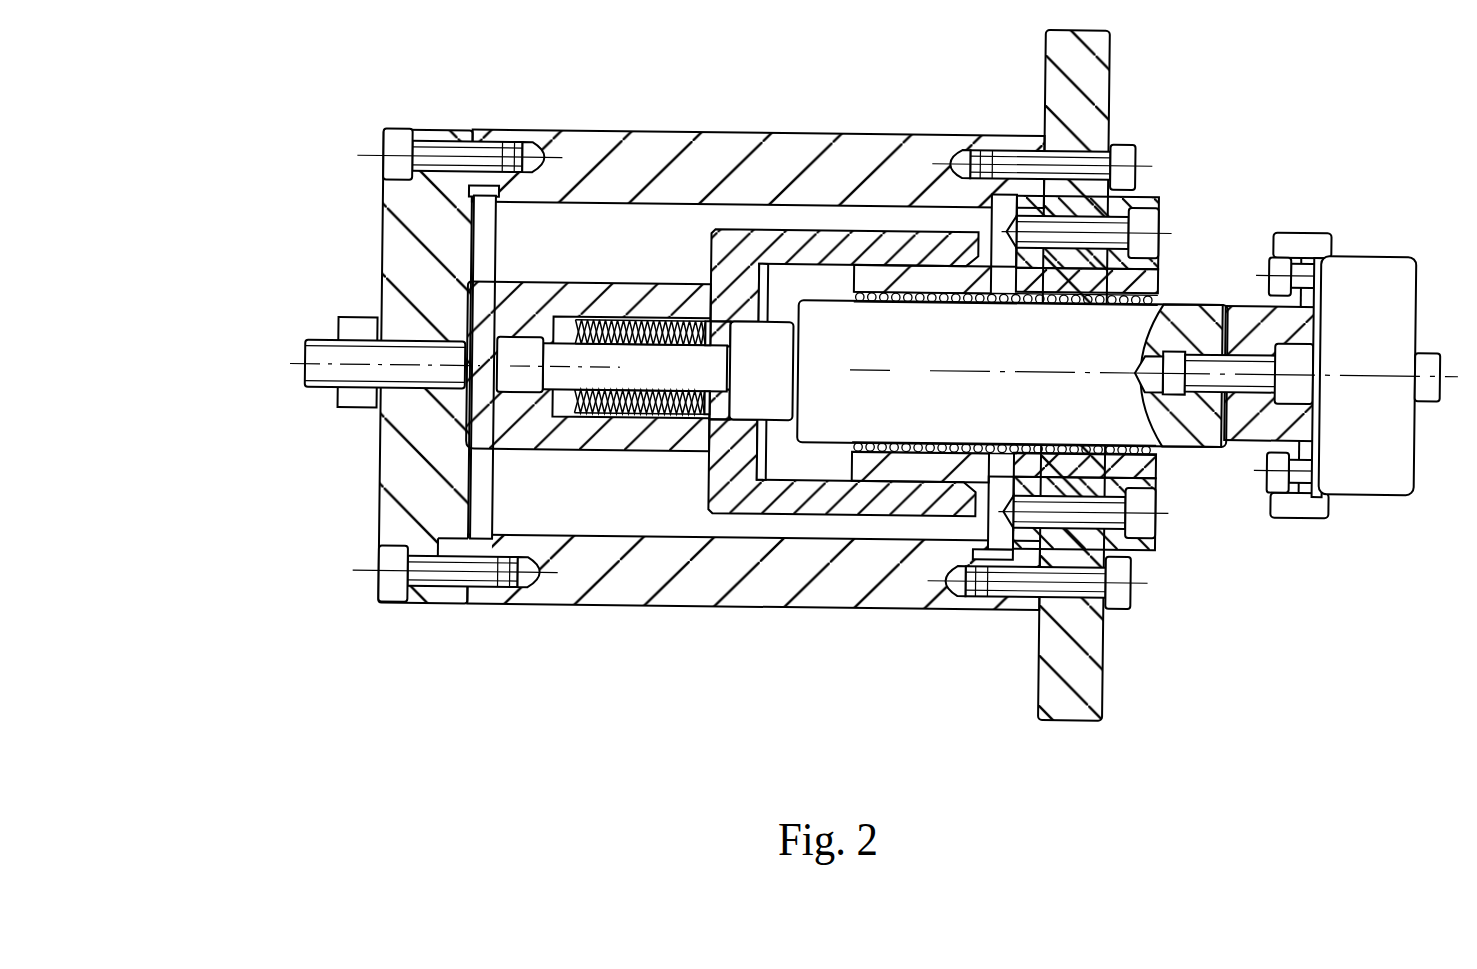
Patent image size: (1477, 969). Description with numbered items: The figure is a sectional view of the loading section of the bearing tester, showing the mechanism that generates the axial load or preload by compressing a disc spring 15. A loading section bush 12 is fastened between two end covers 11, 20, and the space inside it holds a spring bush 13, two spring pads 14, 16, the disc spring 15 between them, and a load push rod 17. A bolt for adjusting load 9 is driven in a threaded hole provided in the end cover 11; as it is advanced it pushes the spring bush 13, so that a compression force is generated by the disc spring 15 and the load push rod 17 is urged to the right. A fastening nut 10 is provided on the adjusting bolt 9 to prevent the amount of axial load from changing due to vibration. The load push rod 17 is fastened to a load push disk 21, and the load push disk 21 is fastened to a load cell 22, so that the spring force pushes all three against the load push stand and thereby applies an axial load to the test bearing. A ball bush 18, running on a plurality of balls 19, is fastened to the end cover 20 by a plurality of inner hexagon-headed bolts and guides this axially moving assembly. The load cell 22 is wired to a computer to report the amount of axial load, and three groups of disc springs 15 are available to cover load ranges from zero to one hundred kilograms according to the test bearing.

The bolt for adjusting load 9 is at (317, 353).
The fastening nut 10 is at (355, 404).
The end cover 11 is at (409, 274).
The loading section bush 12 is at (650, 151).
The spring bush 13 is at (504, 326).
The spring pad 14 is at (555, 402).
The disc spring 15 is at (623, 402).
The spring pad 16 is at (708, 399).
The load push rod 17 is at (763, 338).
The ball bush 18 is at (904, 464).
The balls 19 is at (953, 436).
The end cover 20 is at (1068, 663).
The load push disk 21 is at (1271, 420).
The load cell 22 is at (1367, 291).